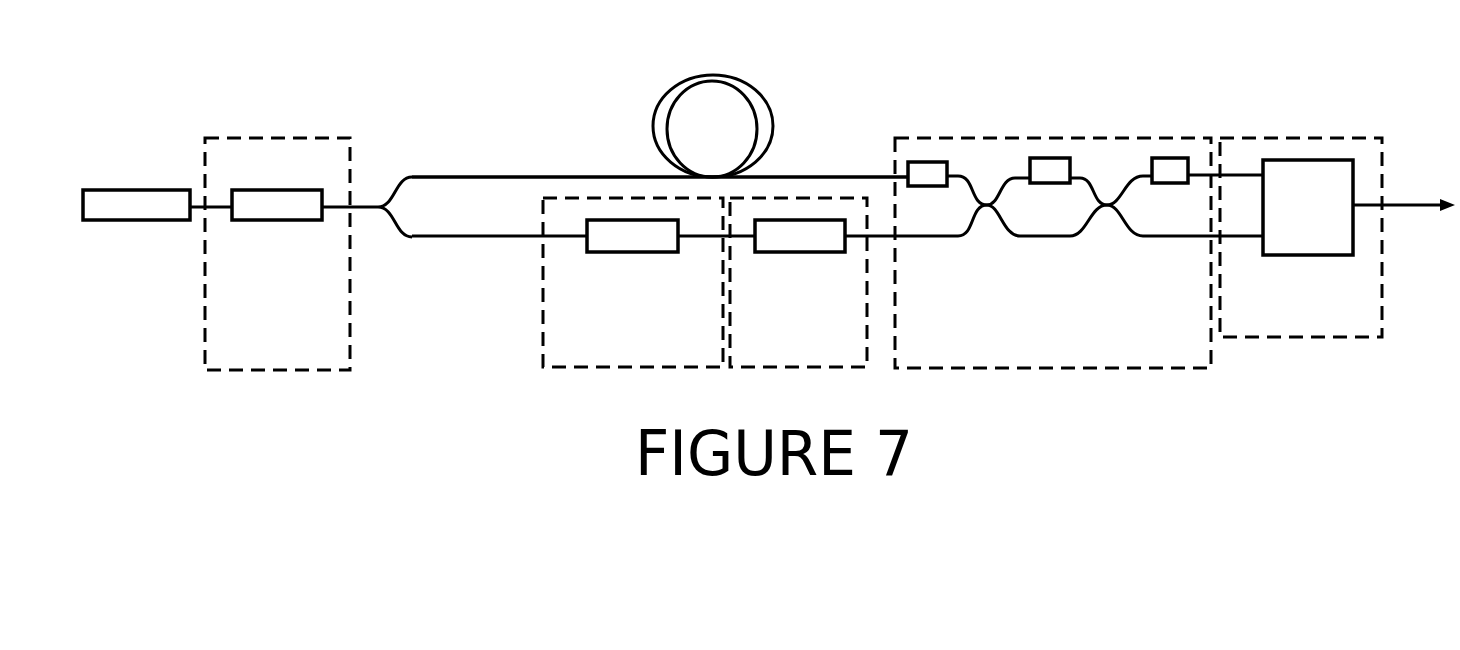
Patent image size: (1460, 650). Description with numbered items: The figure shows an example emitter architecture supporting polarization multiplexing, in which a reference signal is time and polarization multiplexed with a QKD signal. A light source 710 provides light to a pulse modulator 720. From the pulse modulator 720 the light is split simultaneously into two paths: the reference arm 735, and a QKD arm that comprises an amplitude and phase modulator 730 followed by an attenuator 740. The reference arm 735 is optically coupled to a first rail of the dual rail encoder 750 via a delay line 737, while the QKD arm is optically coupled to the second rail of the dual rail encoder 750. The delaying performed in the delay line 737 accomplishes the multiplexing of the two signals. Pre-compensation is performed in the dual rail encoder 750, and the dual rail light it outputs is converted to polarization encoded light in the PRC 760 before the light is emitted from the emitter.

The light source 710 is at (137, 210).
The pulse modulator 720 is at (277, 213).
The amplitude and phase modulator 730 is at (638, 245).
The reference arm 735 is at (540, 177).
The delay line 737 is at (713, 126).
The attenuator 740 is at (805, 245).
The dual rail encoder 750 is at (1079, 253).
The PRC 760 is at (1305, 230).